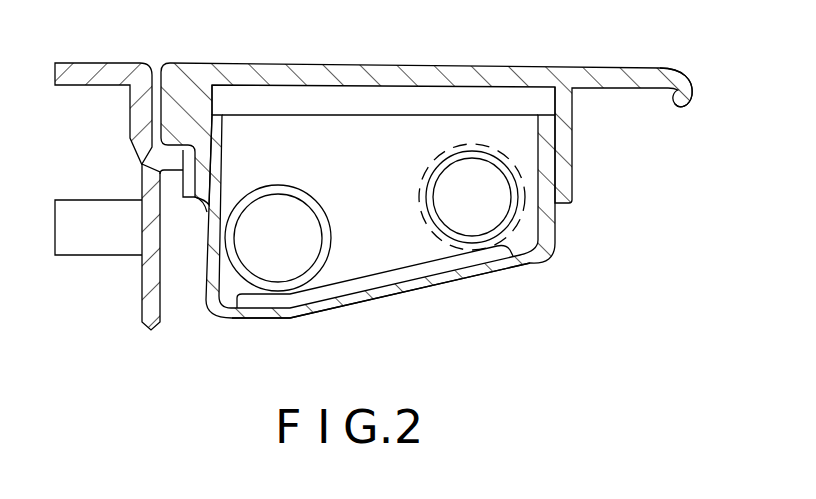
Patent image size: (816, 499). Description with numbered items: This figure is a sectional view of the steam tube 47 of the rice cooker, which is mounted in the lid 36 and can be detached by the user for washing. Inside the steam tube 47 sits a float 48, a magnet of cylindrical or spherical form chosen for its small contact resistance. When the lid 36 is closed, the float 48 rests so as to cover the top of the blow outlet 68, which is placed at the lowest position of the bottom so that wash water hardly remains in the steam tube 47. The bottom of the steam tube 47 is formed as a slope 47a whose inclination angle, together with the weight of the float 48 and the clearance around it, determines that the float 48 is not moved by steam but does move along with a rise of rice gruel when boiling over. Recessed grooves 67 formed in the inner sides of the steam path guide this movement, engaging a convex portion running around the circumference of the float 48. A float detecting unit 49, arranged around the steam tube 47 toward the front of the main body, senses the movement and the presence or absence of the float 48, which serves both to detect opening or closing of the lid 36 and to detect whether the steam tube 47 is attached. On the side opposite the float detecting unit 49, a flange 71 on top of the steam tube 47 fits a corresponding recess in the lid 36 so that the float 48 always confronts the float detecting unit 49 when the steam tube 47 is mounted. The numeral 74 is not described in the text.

The lid 36 is at (68, 62).
The cover 74 is at (300, 73).
The steam tube 47 is at (547, 137).
The slope of the bottom of the steam tube 47a is at (423, 288).
The float 48 is at (287, 213).
The float detecting unit 49 is at (95, 240).
The grooves 67 is at (377, 278).
The blow outlet 68 is at (253, 313).
The flange 71 is at (687, 107).